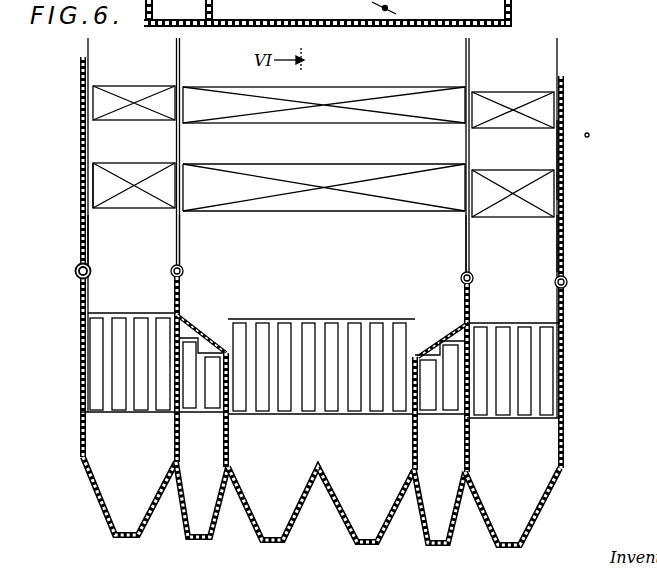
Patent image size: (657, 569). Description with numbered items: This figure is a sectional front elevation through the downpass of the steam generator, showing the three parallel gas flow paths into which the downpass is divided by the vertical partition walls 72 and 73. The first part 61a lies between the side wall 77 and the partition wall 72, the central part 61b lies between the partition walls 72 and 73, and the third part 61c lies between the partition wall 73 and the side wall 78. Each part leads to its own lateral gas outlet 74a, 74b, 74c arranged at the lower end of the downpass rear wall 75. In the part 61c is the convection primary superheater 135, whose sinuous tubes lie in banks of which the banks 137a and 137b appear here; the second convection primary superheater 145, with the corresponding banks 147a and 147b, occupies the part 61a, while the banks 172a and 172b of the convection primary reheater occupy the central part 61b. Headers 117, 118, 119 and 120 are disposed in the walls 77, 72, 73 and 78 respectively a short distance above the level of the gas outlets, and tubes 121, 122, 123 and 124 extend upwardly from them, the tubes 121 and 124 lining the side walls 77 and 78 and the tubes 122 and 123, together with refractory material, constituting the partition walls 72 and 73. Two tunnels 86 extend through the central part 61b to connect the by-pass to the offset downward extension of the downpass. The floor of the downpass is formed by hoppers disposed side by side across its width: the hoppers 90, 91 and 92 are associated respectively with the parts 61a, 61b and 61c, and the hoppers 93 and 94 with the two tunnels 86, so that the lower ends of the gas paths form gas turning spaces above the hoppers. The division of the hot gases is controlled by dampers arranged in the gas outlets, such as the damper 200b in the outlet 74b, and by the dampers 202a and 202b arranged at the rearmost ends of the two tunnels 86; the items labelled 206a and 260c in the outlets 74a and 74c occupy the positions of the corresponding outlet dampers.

The first part of the downpass 61a is at (106, 139).
The central part of the downpass 61b is at (324, 154).
The third part of the downpass 61c is at (547, 143).
The partition wall 72 is at (180, 136).
The partition wall 73 is at (466, 148).
The downpass rear wall 75 is at (358, 213).
The side wall of the downpass 77 is at (81, 143).
The side wall of the downpass 78 is at (354, 29).
The tunnels 86 is at (208, 466).
The hopper 90 is at (115, 505).
The hopper 91 is at (353, 497).
The hopper 92 is at (517, 515).
The hopper 93 is at (200, 515).
The hopper 94 is at (440, 519).
The header 117 is at (90, 273).
The header 118 is at (184, 275).
The header 119 is at (471, 283).
The header 120 is at (565, 287).
The tubes 121 is at (88, 240).
The tubes 122 is at (178, 238).
The tubes 123 is at (465, 259).
The tubes 124 is at (558, 234).
The convection primary superheater 135 is at (534, 176).
The tube bank of the primary superheater 137a is at (546, 201).
The tube bank of the primary superheater 137b is at (548, 114).
The second convection primary superheater 145 is at (104, 177).
The tube bank of the second primary superheater 147a is at (96, 186).
The tube bank of the second primary superheater 147b is at (100, 96).
The tube bank of the primary reheater 172a is at (262, 203).
The tube bank of the primary reheater 172b is at (384, 100).
The damper 200b is at (260, 397).
The damper 202a is at (185, 397).
The damper 202b is at (427, 405).
The tube element 206a is at (105, 378).
The tube element 260c is at (477, 407).
The lateral gas outlet 74a is at (128, 375).
The lateral gas outlet 74b is at (347, 383).
The lateral gas outlet 74c is at (513, 387).